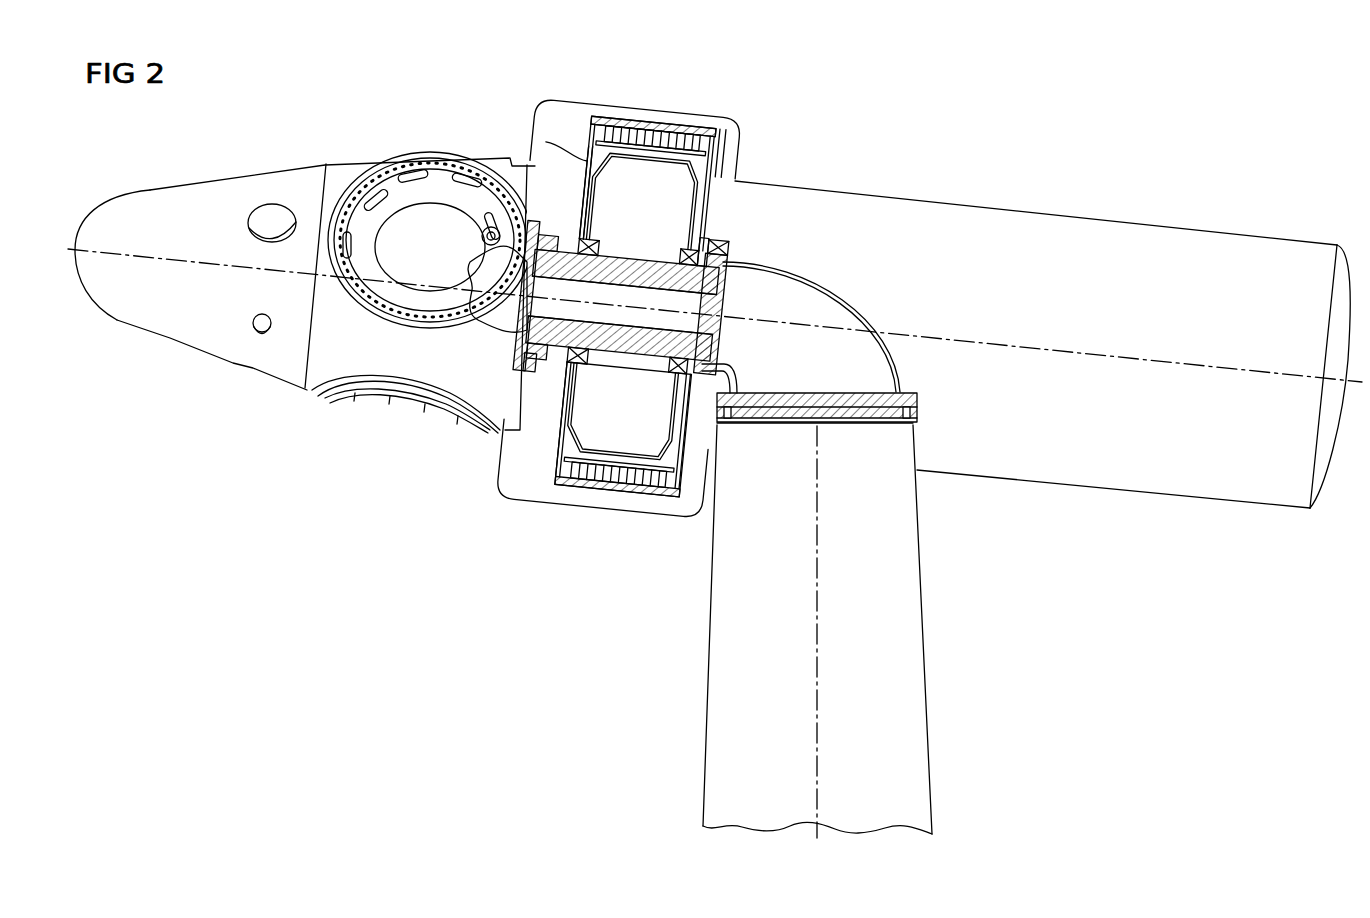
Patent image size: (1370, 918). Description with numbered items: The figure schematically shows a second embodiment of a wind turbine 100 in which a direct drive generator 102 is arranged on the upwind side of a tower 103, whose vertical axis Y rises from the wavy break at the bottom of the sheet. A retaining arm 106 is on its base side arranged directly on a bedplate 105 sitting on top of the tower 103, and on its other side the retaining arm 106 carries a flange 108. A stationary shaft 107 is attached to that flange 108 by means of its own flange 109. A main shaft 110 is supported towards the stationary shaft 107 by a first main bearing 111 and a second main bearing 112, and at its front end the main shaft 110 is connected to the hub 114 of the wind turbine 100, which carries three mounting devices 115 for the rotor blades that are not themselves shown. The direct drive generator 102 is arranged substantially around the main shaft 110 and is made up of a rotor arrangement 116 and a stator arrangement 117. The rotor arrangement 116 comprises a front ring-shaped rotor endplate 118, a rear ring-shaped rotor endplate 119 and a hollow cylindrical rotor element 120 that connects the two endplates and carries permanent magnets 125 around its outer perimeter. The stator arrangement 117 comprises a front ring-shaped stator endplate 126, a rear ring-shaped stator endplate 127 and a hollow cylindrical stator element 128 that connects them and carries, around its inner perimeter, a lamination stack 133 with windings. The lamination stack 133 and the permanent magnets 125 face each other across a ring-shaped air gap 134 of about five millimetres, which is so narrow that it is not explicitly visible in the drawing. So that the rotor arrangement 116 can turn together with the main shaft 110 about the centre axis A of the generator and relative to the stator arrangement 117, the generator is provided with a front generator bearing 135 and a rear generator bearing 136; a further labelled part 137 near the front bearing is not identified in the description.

The wind turbine 100 is at (963, 95).
The direct drive generator 102 is at (632, 80).
The tower 103 is at (920, 556).
The bedplate 105 is at (800, 405).
The retaining arm 106 is at (800, 280).
The stationary shaft 107 is at (718, 284).
The flange 108 is at (722, 249).
The flange 109 is at (700, 243).
The main shaft 110 is at (620, 255).
The first main bearing 111 is at (532, 270).
The second main bearing 112 is at (663, 257).
The hub 114 is at (337, 172).
The mounting devices 115 is at (440, 177).
The rotor arrangement 116 is at (636, 432).
The stator arrangement 117 is at (708, 122).
The front ring-shaped rotor endplate 118 is at (588, 128).
The rear ring-shaped rotor endplate 119 is at (688, 130).
The hollow cylindrical rotor element 120 is at (648, 152).
The permanent magnets 125 is at (601, 462).
The front ring-shaped stator endplate 126 is at (565, 175).
The rear ring-shaped stator endplate 127 is at (733, 175).
The hollow cylindrical stator element 128 is at (671, 505).
The lamination stack 133 is at (610, 488).
The air gap 134 is at (575, 462).
The front generator bearing 135 is at (558, 373).
The rear generator bearing 136 is at (700, 366).
The bearing seat 137 is at (534, 355).
The centre axis A is at (989, 335).
The tower axis Y is at (818, 598).